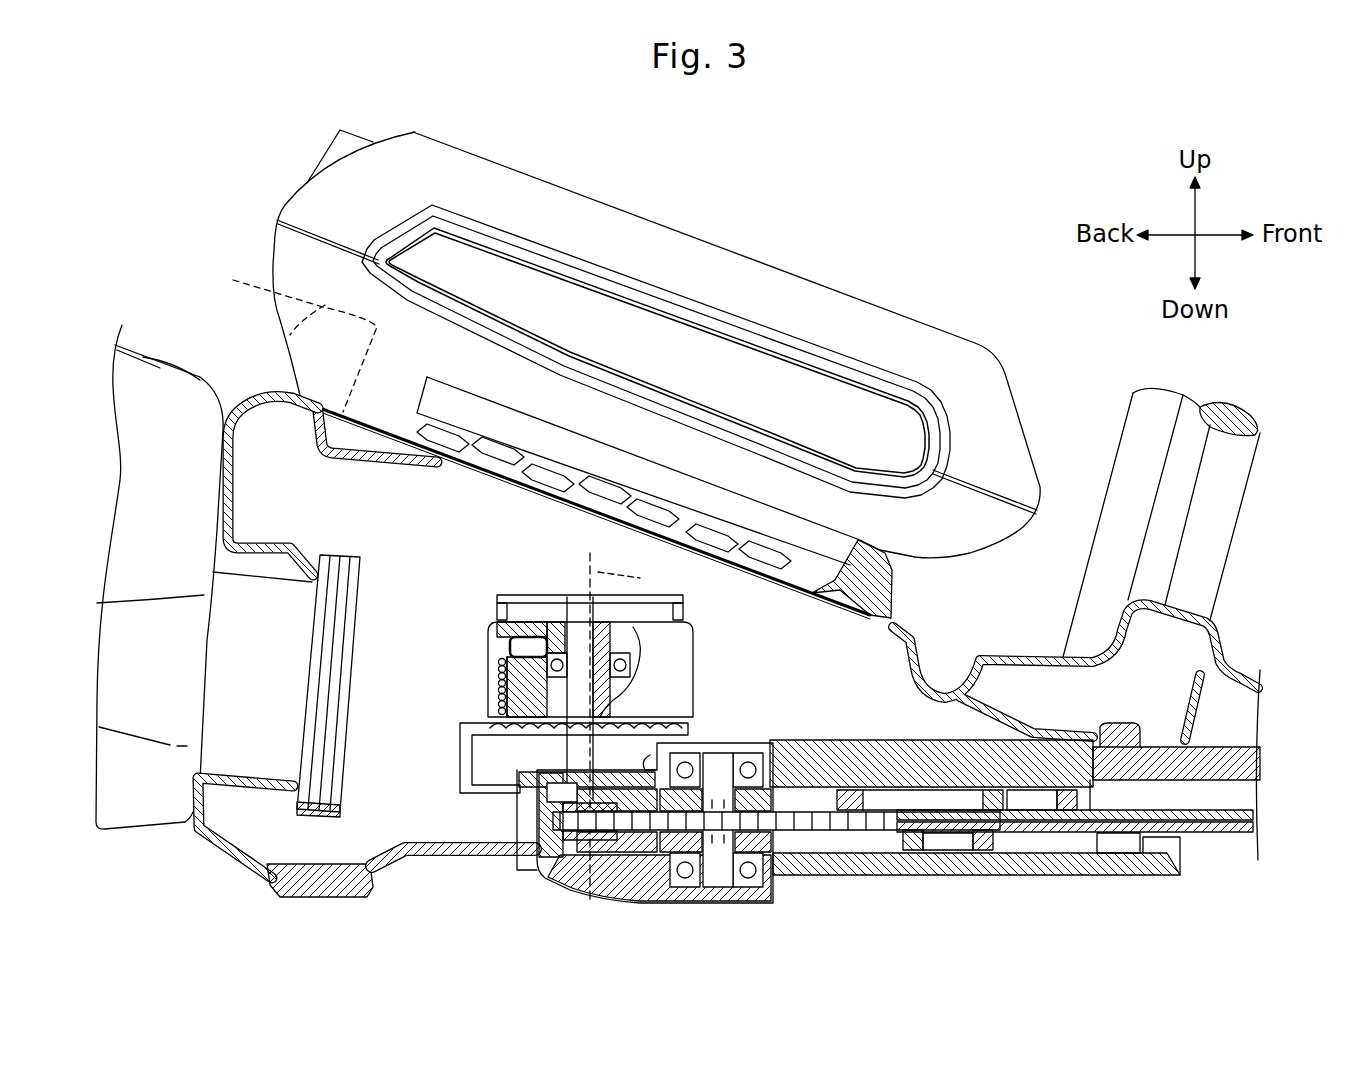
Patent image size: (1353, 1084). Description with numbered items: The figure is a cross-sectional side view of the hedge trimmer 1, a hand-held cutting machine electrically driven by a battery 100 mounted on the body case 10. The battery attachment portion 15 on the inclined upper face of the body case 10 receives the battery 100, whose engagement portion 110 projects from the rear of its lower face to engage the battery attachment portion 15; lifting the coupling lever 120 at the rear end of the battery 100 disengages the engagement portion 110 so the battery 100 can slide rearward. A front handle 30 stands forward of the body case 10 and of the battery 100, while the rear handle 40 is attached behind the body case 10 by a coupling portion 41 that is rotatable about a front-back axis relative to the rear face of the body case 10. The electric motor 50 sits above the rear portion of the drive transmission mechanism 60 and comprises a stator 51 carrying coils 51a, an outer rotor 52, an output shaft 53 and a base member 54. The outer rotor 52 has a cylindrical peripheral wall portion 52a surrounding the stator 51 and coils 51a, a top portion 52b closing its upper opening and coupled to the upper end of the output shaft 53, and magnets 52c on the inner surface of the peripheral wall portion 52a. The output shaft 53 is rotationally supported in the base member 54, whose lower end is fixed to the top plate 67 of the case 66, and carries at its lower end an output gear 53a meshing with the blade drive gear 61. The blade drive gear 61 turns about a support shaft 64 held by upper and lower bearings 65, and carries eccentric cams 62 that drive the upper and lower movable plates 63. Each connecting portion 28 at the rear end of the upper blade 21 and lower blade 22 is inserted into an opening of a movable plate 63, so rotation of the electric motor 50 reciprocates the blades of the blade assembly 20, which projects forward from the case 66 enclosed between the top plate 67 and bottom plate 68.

The hedge trimmer 1 is at (928, 277).
The body case 10 is at (458, 858).
The battery attachment portion 15 is at (877, 573).
The blade assembly 20 is at (1101, 787).
The upper blade 21 is at (1197, 823).
The lower blade 22 is at (1230, 835).
The connecting portion 28 is at (930, 837).
The front handle 30 is at (1230, 505).
The rear handle 40 is at (140, 383).
The coupling portion 41 is at (163, 400).
The electric motor 50 is at (473, 582).
The stator 51 is at (547, 700).
The coil 51a is at (527, 690).
The outer rotor 52 is at (490, 625).
The peripheral wall portion 52a is at (492, 643).
The top portion 52b is at (528, 600).
The magnet 52c is at (497, 675).
The output shaft 53 is at (580, 600).
The output gear 53a is at (577, 820).
The base member 54 is at (497, 718).
The drive transmission mechanism 60 is at (782, 724).
The blade drive gear 61 is at (627, 820).
The eccentric cam 62 is at (797, 800).
The movable plate 63 is at (650, 767).
The support shaft 64 is at (717, 875).
The bearing 65 is at (745, 745).
The case 66 is at (1023, 797).
The top plate 67 is at (910, 767).
The bottom plate 68 is at (1010, 867).
The battery 100 is at (680, 270).
The engagement portion 110 is at (358, 430).
The coupling lever 120 is at (282, 338).